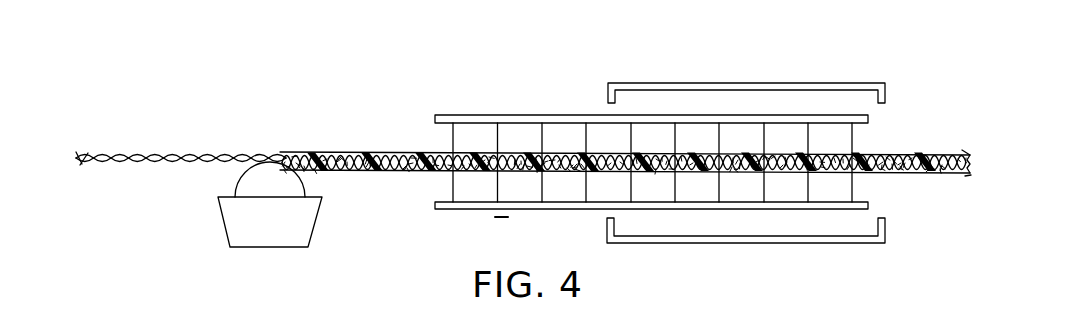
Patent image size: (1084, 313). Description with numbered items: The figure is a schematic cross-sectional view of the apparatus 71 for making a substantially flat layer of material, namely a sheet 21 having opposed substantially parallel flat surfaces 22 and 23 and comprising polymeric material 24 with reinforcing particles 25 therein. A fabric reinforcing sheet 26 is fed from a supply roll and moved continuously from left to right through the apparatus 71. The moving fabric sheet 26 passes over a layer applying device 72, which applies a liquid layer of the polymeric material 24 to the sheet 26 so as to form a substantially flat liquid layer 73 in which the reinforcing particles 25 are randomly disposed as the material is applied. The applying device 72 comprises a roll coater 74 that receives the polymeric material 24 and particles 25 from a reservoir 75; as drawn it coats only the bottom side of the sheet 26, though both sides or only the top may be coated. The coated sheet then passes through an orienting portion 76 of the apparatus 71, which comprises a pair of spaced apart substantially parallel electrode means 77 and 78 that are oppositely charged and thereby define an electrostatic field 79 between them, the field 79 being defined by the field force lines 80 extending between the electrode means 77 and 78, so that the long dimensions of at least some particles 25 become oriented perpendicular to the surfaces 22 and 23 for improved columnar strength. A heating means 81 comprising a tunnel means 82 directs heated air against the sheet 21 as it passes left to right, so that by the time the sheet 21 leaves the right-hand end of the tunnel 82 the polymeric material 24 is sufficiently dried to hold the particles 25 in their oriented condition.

The sheet 21 is at (908, 155).
The flat surface 22 is at (947, 157).
The flat surface 23 is at (960, 174).
The polymeric material 24 is at (361, 171).
The reinforcing particles 25 is at (413, 172).
The fabric reinforcing sheet 26 is at (135, 152).
The apparatus 71 is at (681, 138).
The layer applying device 72 is at (220, 178).
The liquid layer of polymeric material 73 is at (641, 172).
The roll coater 74 is at (266, 172).
The reservoir 75 is at (233, 217).
The electrostatic orienting means 76 is at (681, 157).
The electrode means 77 is at (445, 115).
The electrode means 78 is at (443, 209).
The electrostatic field 79 is at (862, 143).
The field force lines 80 is at (853, 182).
The heating means 81 is at (747, 129).
The tunnel means 82 is at (802, 108).